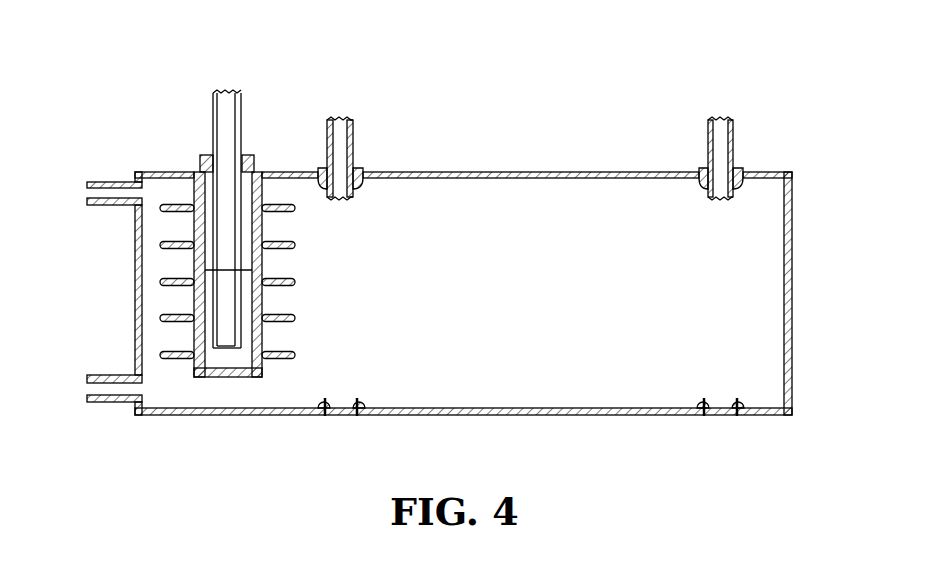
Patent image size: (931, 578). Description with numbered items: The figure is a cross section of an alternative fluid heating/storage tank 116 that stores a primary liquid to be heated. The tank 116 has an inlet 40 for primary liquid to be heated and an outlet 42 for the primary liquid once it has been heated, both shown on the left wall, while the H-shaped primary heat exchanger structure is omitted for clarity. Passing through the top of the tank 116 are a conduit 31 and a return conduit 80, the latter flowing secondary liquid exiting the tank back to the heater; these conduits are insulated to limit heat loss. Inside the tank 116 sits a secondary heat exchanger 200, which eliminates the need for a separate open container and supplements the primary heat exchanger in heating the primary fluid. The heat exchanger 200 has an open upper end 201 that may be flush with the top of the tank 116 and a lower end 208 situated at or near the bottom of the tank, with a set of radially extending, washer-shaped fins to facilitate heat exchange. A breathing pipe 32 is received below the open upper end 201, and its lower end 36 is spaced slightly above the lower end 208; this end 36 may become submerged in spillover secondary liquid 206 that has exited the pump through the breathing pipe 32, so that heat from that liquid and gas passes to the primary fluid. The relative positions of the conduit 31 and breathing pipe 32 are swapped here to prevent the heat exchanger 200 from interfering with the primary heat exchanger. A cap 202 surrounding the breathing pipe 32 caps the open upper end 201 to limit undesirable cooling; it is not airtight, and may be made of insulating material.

The fluid heating/storage tank 116 is at (549, 139).
The outlet 42 is at (105, 181).
The inlet 40 is at (103, 403).
The conduit 31 is at (353, 140).
The return conduit 80 is at (733, 140).
The lower end 208 is at (207, 378).
The cap 202 is at (200, 158).
The breathing pipe 32 is at (213, 117).
The lower end of breathing tube 36 is at (224, 349).
The spillover secondary liquid 206 is at (245, 270).
The open upper end 201 is at (251, 182).
The secondary heat exchanger 200 is at (330, 315).